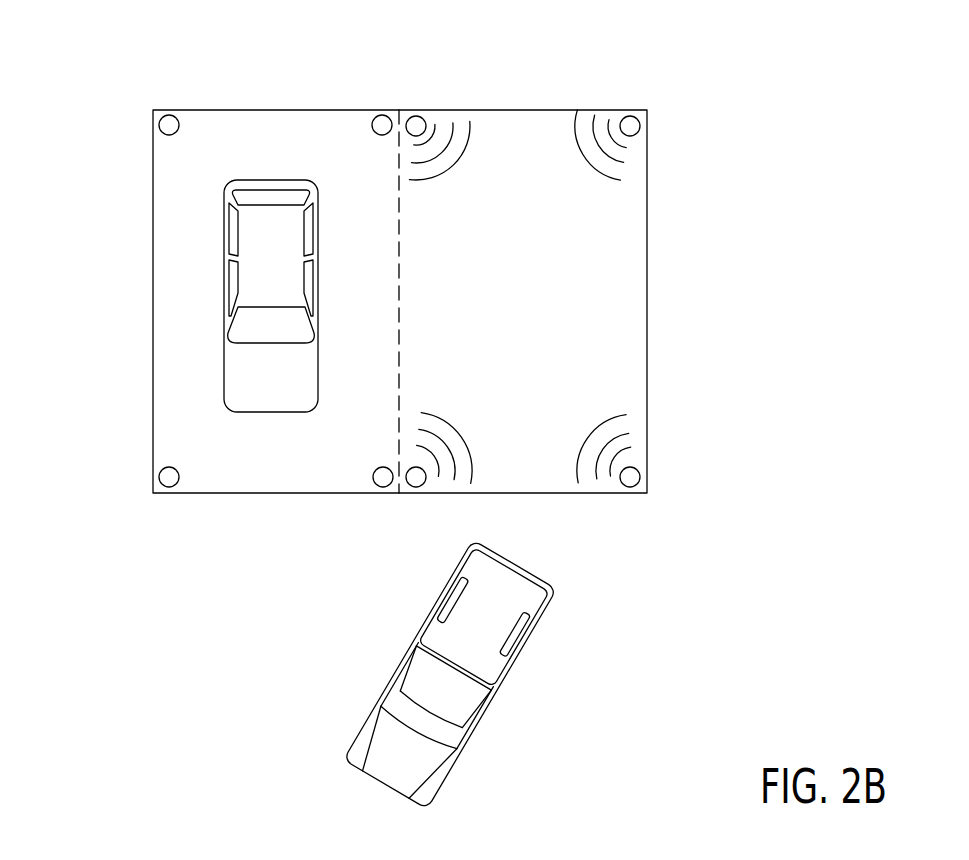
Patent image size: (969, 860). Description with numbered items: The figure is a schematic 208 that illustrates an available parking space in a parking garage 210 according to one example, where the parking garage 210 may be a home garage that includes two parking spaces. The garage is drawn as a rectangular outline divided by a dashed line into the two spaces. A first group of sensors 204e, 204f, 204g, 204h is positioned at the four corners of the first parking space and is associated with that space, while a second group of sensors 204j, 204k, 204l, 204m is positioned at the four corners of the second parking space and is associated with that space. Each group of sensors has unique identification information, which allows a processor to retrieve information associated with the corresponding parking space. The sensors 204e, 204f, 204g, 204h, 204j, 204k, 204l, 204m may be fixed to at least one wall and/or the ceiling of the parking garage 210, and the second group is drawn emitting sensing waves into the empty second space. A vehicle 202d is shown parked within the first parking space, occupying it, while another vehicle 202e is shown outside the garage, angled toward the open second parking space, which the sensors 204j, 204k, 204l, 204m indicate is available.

The schematic 208 is at (95, 51).
The parking garage 210 is at (648, 210).
The vehicle 202d is at (236, 277).
The vehicle 202e is at (452, 763).
The sensor 204e is at (170, 115).
The sensor 204f is at (381, 115).
The sensor 204g is at (169, 488).
The sensor 204h is at (382, 488).
The sensor 204j is at (414, 115).
The sensor 204k is at (631, 115).
The sensor 204l is at (417, 488).
The sensor 204m is at (647, 493).